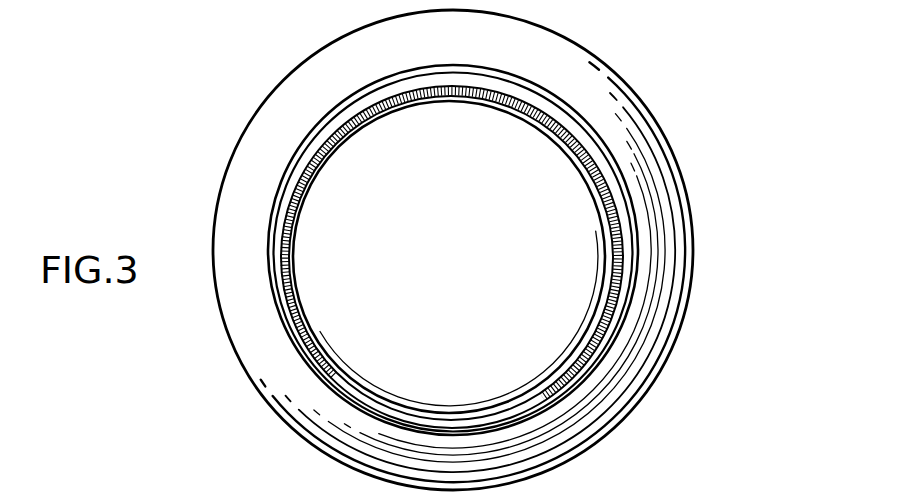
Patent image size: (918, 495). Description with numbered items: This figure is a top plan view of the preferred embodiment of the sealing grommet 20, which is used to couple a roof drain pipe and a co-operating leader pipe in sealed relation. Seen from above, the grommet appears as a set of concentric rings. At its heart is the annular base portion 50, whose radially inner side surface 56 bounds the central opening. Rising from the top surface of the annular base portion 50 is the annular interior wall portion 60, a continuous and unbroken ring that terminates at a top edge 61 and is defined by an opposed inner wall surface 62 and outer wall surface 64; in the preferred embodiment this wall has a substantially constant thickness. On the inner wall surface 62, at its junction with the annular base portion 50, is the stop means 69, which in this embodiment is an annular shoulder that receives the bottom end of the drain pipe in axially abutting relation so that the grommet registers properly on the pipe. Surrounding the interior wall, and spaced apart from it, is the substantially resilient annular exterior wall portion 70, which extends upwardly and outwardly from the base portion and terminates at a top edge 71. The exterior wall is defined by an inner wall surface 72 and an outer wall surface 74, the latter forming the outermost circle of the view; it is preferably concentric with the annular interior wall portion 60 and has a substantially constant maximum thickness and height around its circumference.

The sealing grommet 20 is at (485, 250).
The annular base portion 50 is at (293, 252).
The radially inner side surface 56 is at (608, 262).
The annular interior wall portion 60 is at (453, 82).
The top edge 61 is at (333, 368).
The inner wall surface 62 is at (578, 152).
The outer wall surface 64 is at (550, 97).
The stop means 69 is at (312, 172).
The annular exterior wall portion 70 is at (648, 273).
The top edge 71 is at (625, 323).
The inner wall surface 72 is at (607, 347).
The outer wall surface 74 is at (690, 192).